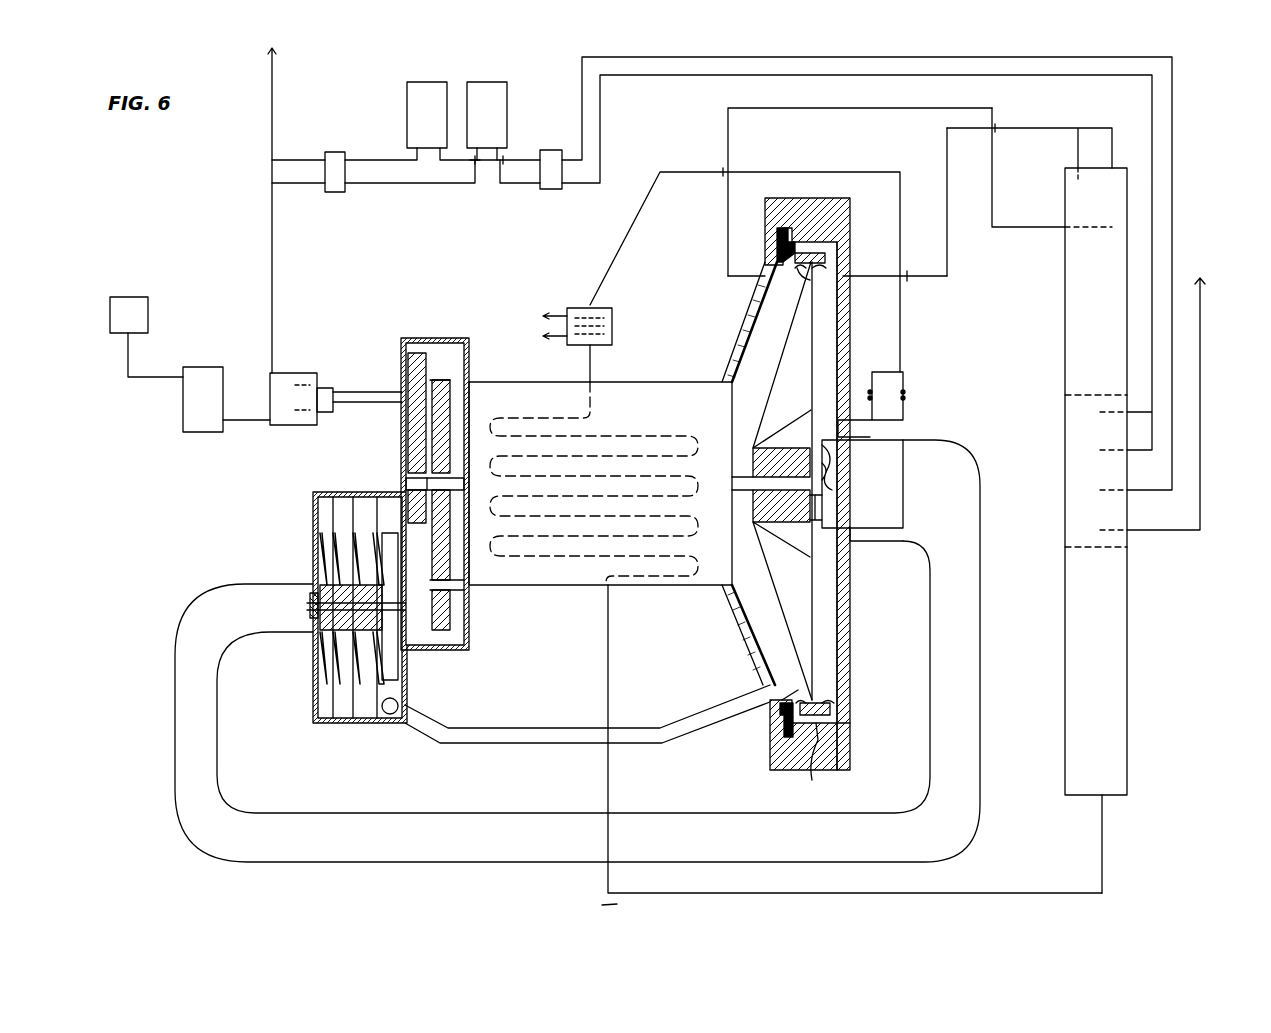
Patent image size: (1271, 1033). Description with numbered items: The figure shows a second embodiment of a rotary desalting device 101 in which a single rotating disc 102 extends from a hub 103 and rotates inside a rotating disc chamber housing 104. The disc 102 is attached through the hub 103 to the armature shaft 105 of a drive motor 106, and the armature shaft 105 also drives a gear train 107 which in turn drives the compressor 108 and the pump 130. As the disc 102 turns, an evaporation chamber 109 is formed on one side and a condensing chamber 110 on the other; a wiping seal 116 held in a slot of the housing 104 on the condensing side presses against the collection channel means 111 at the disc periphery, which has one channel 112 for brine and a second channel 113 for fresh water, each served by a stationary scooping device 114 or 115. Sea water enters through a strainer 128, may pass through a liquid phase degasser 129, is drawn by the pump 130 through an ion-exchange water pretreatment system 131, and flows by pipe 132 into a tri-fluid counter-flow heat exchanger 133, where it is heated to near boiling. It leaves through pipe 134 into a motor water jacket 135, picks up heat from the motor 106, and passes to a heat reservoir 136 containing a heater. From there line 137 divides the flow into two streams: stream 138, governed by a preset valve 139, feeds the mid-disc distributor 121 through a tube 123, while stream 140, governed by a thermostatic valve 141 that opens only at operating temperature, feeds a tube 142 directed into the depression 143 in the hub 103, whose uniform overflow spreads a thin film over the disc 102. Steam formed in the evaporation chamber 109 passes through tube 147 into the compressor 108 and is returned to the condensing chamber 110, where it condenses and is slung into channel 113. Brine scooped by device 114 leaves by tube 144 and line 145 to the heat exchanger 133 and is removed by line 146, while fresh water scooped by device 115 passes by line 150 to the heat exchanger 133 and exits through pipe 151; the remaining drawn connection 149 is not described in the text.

The rotary desalting device 101 is at (567, 652).
The rotating disc 102 is at (815, 625).
The hub 103 is at (764, 527).
The rotating disc chamber housing 104 is at (850, 684).
The armature shaft 105 is at (738, 483).
The drive motor 106 is at (530, 583).
The gear train 107 is at (452, 418).
The compressor 108 is at (322, 728).
The evaporation chamber 109 is at (830, 655).
The condensing chamber 110 is at (760, 620).
The collection channel means 111 is at (829, 762).
The collection channel 112 is at (836, 716).
The collection channel 113 is at (790, 702).
The scooping device 114 is at (826, 266).
The scooping device 115 is at (800, 270).
The wiping seal 116 is at (778, 252).
The mid-disc distributor 121 is at (828, 410).
The tube 123 is at (870, 543).
The strainer 128 is at (148, 316).
The liquid phase degasser 129 is at (195, 432).
The pump 130 is at (308, 368).
The ion-exchange water pretreatment system 131 is at (478, 205).
The pipe 132 is at (1062, 78).
The tri-fluid counter-flow heat exchanger 133 is at (1068, 712).
The pipe 134 is at (612, 783).
The motor water jacket 135 is at (641, 428).
The heat reservoir 136 is at (608, 312).
The line 137 is at (625, 238).
The stream (line) 138 is at (905, 462).
The preset valve 139 is at (905, 392).
The stream (line) 140 is at (885, 372).
The thermostatic valve 141 is at (875, 397).
The tube 142 is at (833, 475).
The depression 143 is at (818, 497).
The tube 144 is at (876, 280).
The line 145 is at (995, 174).
The line 146 is at (1174, 120).
The tube 147 is at (432, 865).
The line 149 is at (730, 283).
The line 150 is at (726, 122).
The pipe 151 is at (1202, 322).